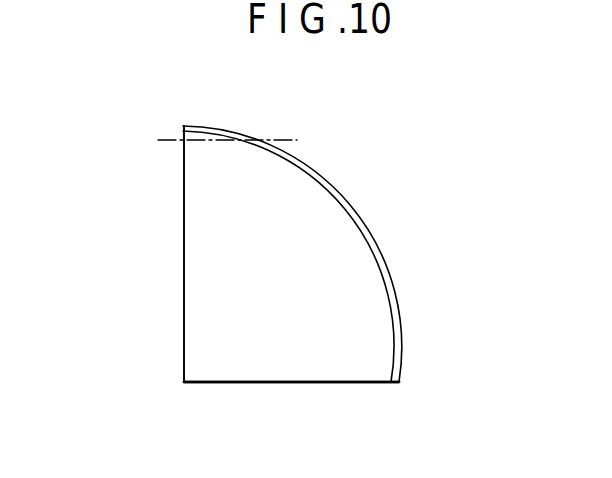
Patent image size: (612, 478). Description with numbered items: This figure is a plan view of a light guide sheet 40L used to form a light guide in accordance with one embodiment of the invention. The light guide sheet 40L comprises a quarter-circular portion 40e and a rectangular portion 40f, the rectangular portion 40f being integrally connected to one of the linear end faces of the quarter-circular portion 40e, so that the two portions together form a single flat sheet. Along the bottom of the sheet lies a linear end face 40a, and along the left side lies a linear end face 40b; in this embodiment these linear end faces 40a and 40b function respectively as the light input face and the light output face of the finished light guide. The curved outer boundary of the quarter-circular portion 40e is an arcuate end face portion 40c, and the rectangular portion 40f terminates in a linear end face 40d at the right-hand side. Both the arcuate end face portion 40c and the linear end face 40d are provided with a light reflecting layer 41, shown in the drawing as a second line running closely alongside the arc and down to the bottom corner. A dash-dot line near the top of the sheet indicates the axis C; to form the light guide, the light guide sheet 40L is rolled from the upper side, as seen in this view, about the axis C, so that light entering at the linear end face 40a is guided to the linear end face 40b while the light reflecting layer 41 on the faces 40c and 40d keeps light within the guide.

The light guide sheet 40L is at (153, 375).
The linear end face 40a is at (242, 383).
The linear end face 40b is at (184, 226).
The arcuate end face portion 40c is at (367, 228).
The linear end face 40d is at (393, 358).
The quarter-circular portion 40e is at (302, 222).
The rectangular portion 40f is at (318, 366).
The light reflecting layer 41 is at (390, 290).
The axis C is at (290, 140).